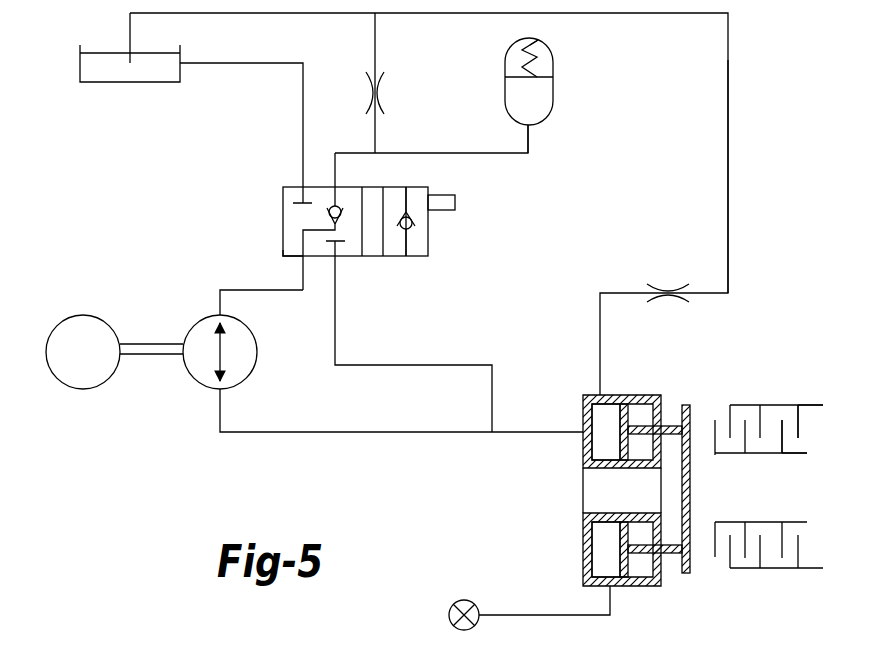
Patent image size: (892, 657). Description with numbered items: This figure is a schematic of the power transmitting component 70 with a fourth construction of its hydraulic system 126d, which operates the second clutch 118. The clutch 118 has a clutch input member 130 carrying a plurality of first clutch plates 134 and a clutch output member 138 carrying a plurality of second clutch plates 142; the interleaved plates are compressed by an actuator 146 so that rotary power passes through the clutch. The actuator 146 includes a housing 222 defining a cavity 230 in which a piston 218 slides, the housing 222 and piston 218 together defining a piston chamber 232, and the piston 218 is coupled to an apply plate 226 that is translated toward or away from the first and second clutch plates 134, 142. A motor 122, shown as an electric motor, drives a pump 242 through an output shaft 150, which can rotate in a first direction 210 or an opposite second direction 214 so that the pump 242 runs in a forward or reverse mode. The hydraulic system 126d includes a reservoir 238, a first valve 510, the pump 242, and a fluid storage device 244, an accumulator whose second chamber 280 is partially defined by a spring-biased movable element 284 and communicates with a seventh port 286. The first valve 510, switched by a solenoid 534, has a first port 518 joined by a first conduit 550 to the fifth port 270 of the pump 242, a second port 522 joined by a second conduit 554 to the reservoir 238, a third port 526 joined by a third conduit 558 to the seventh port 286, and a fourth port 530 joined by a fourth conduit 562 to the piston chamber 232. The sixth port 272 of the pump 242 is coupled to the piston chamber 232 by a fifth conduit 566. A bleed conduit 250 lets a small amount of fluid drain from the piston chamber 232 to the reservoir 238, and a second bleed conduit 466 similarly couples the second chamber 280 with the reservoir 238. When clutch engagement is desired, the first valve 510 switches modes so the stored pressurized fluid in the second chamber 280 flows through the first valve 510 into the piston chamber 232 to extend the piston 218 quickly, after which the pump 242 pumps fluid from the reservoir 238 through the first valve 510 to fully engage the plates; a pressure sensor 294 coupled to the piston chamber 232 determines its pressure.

The power transmitting component 70 is at (775, 154).
The second clutch 118 is at (778, 400).
The motor 122 is at (58, 384).
The hydraulic system 126d is at (148, 452).
The clutch input member 130 is at (810, 404).
The first clutch plates 134 is at (800, 427).
The clutch output member 138 is at (788, 457).
The second clutch plates 142 is at (780, 436).
The actuator 146 is at (568, 546).
The output shaft 150 is at (153, 356).
The first direction 210 is at (131, 380).
The second direction 214 is at (162, 373).
The piston 218 is at (620, 558).
The housing 222 is at (582, 523).
The apply plate 226 is at (692, 415).
The cavity 230 is at (632, 403).
The piston chamber 232 is at (613, 448).
The reservoir 238 is at (80, 63).
The pump 242 is at (187, 374).
The fluid storage device 244 is at (517, 40).
The bleed conduit 250 is at (728, 95).
The fifth port 270 is at (223, 314).
The sixth port 272 is at (223, 390).
The second chamber 280 is at (517, 92).
The movable element 284 is at (548, 72).
The seventh port 286 is at (531, 126).
The pressure sensor 294 is at (453, 604).
The second bleed conduit 466 is at (375, 30).
The first valve 510 is at (283, 204).
The first port 518 is at (300, 257).
The second port 522 is at (300, 187).
The third port 526 is at (332, 187).
The fourth port 530 is at (338, 257).
The solenoid 534 is at (455, 202).
The first conduit 550 is at (230, 289).
The second conduit 554 is at (205, 63).
The third conduit 558 is at (426, 153).
The fourth conduit 562 is at (337, 318).
The fifth conduit 566 is at (347, 433).